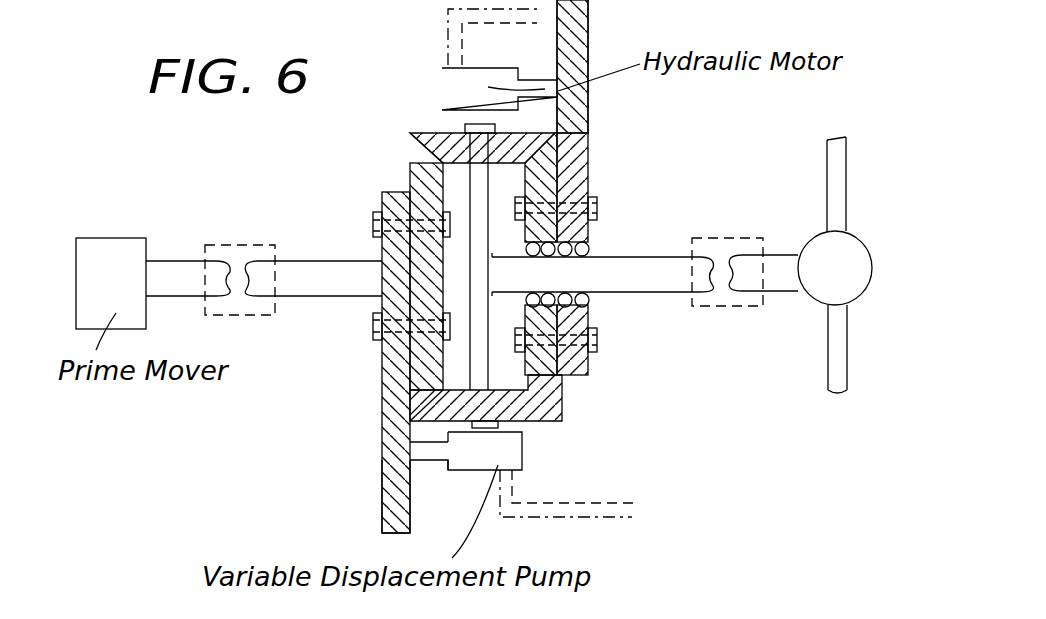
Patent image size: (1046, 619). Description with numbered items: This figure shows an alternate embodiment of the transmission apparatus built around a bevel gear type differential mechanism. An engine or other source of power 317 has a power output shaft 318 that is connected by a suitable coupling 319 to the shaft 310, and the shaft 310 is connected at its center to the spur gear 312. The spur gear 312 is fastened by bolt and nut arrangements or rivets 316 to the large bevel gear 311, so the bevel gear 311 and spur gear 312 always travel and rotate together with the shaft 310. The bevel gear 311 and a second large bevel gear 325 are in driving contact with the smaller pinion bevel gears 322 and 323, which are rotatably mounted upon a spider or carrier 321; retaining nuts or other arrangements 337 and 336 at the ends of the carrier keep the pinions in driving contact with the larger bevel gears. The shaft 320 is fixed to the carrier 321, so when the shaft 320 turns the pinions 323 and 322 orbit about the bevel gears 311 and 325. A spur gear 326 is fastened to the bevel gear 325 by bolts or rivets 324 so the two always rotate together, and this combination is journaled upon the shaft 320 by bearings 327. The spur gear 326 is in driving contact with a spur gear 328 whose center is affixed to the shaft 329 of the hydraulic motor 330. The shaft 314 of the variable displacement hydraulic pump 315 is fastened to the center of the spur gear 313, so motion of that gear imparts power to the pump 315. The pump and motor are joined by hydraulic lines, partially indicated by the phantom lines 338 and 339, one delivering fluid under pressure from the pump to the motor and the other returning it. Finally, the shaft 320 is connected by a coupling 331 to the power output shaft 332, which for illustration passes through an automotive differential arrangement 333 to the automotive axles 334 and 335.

The shaft 310 is at (341, 286).
The bevel gear 311 is at (425, 186).
The spur gear 312 is at (396, 200).
The spur gear 313 is at (400, 467).
The shaft 314 is at (432, 461).
The variable displacement hydraulic pump 315 is at (510, 448).
The bolt and nut arrangements or rivets 316 is at (375, 226).
The engine or other source of power 317 is at (98, 252).
The power output shaft 318 is at (166, 272).
The coupling 319 is at (249, 232).
The shaft 320 is at (651, 263).
The spider or carrier 321 is at (496, 355).
The pinion bevel gear 322 is at (430, 141).
The pinion bevel gear 323 is at (533, 405).
The bolts or rivets 324 is at (598, 208).
The bevel gear 325 is at (587, 158).
The spur gear 326 is at (589, 368).
The bearings 327 is at (590, 248).
The spur gear 328 is at (571, 110).
The shaft 329 is at (533, 79).
The hydraulic motor 330 is at (480, 80).
The coupling 331 is at (756, 227).
The power output shaft 332 is at (791, 292).
The automotive differential arrangement 333 is at (845, 256).
The automotive axle 334 is at (834, 152).
The automotive axle 335 is at (838, 377).
The retaining nut or other arrangement 336 is at (472, 423).
The retaining nut or other arrangement 337 is at (465, 126).
The hydraulic line 338 is at (452, 44).
The hydraulic line 339 is at (440, 15).